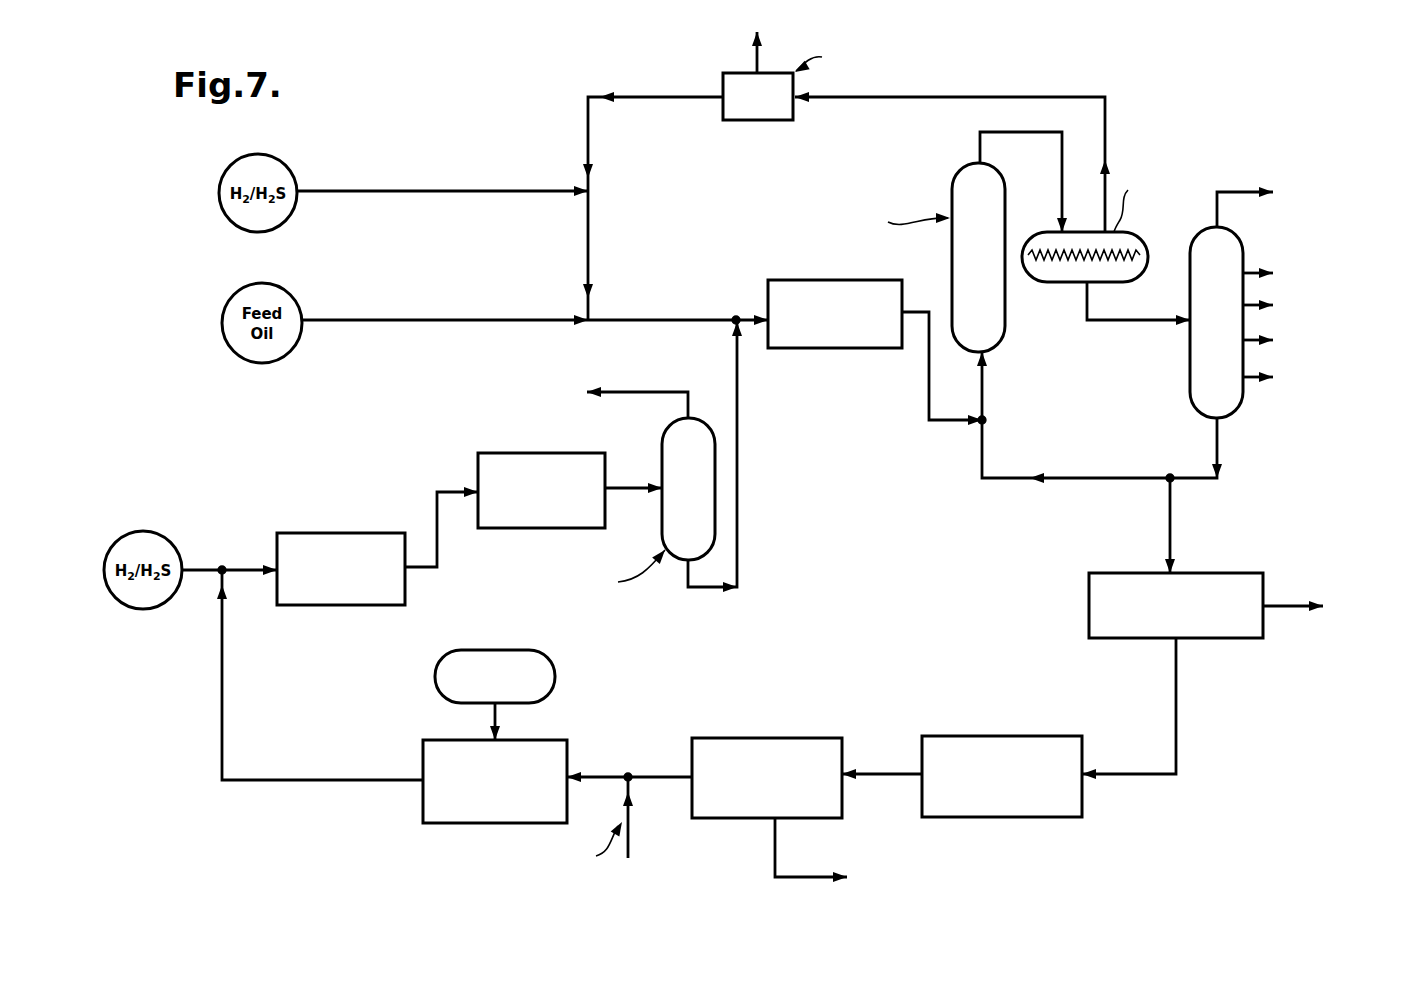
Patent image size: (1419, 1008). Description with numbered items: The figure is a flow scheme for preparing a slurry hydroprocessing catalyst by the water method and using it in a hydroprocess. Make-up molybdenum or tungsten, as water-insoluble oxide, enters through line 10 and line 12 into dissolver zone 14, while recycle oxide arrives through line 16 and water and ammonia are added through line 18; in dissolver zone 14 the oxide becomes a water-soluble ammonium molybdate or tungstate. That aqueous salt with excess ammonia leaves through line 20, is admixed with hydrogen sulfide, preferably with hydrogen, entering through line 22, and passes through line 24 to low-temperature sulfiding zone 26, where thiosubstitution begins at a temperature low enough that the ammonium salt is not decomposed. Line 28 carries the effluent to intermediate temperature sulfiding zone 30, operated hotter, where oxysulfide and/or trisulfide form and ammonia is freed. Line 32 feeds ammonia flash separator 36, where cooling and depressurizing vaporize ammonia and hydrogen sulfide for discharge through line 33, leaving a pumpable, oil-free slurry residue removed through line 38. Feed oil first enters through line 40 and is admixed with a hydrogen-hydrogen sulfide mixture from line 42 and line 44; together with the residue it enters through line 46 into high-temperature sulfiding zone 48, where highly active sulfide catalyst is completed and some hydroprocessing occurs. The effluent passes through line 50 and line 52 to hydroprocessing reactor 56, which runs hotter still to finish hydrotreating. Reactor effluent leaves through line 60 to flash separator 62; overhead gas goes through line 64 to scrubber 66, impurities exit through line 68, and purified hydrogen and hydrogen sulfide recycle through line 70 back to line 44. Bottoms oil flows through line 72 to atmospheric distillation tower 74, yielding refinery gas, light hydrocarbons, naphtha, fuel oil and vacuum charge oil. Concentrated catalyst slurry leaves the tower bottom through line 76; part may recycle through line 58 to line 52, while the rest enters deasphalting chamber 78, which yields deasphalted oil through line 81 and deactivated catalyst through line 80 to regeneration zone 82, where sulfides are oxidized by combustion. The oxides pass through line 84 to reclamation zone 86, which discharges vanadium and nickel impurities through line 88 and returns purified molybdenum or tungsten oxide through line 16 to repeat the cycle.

The line 10 is at (630, 844).
The line 12 is at (602, 771).
The dissolver zone 14 is at (423, 803).
The line 16 is at (652, 776).
The line 18 is at (490, 714).
The line 20 is at (224, 718).
The line 22 is at (204, 565).
The line 24 is at (243, 567).
The low-temperature sulfiding zone 26 is at (337, 534).
The line 28 is at (437, 515).
The intermediate temperature sulfiding zone 30 is at (483, 454).
The line 32 is at (633, 492).
The line 33 is at (648, 392).
The ammonia separator or flash chamber 36 is at (668, 438).
The line 38 is at (739, 440).
The line 40 is at (462, 321).
The line 42 is at (460, 187).
The line 44 is at (589, 266).
The line 46 is at (741, 314).
The high-temperature sulfiding zone 48 is at (787, 286).
The line 50 is at (928, 391).
The line 52 is at (983, 385).
The hydroprocessing reactor 56 is at (950, 257).
The line 58 is at (1090, 477).
The line 60 is at (1039, 133).
The flash separator 62 is at (1131, 238).
The line 64 is at (950, 97).
The scrubber 66 is at (788, 112).
The line 68 is at (755, 48).
The line 70 is at (589, 151).
The line 72 is at (1145, 324).
The atmospheric distillation tower 74 is at (1190, 382).
The line 76 is at (1208, 479).
The deasphalting chamber 78 is at (1089, 607).
The line 80 is at (1178, 712).
The line 81 is at (1290, 608).
The catalyst regeneration zone 82 is at (1022, 736).
The line 84 is at (876, 772).
The catalyst reclamation zone 86 is at (782, 738).
The line 88 is at (788, 878).